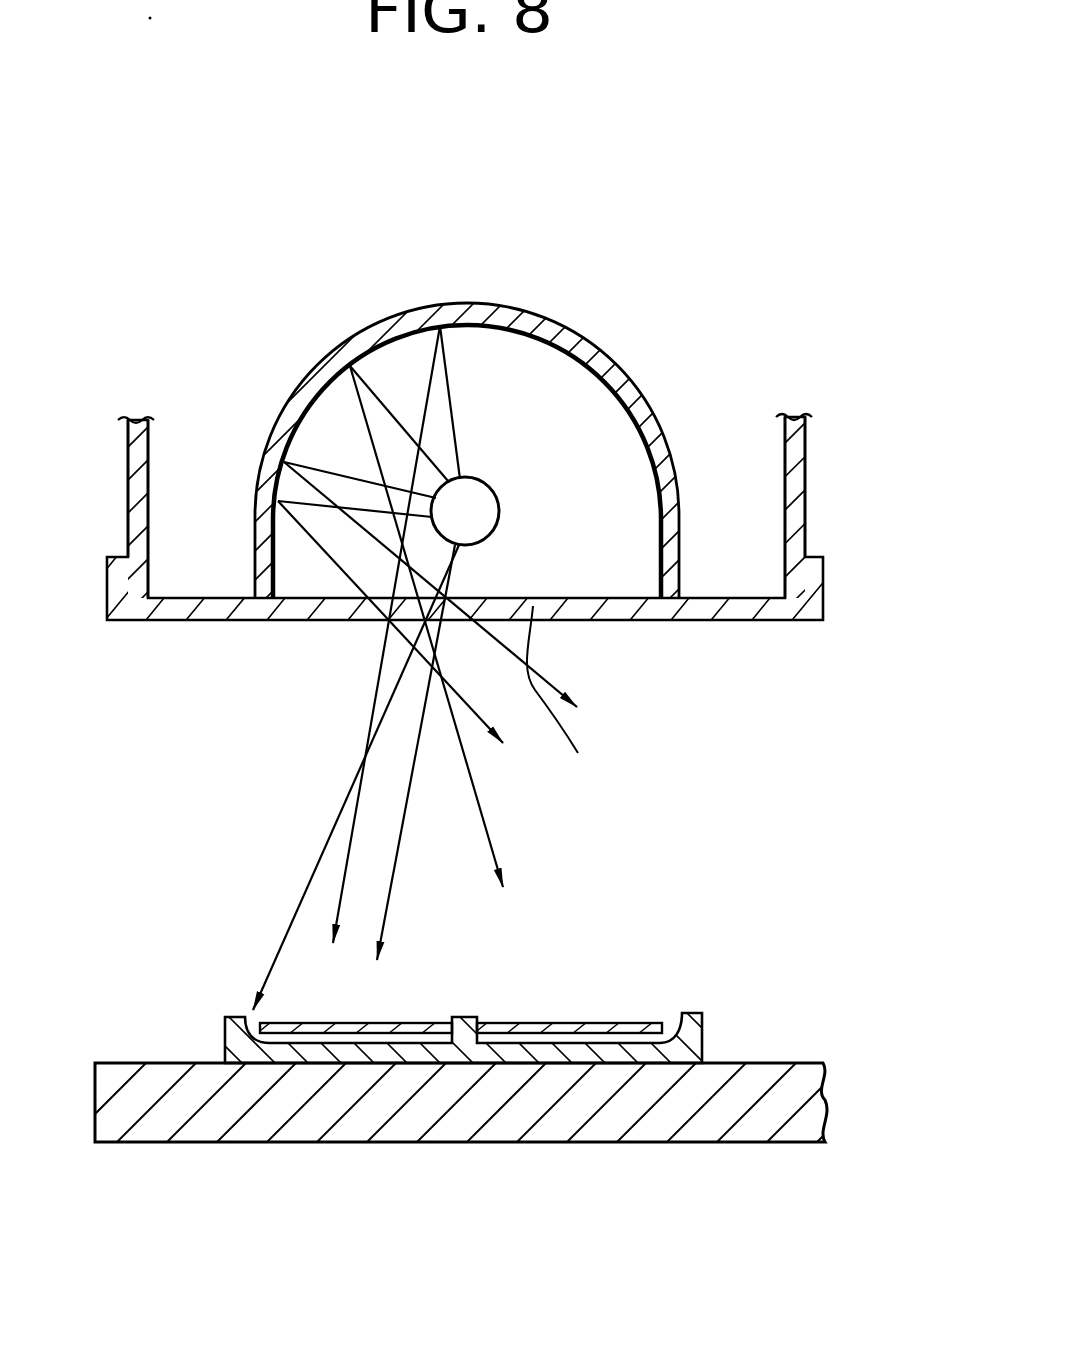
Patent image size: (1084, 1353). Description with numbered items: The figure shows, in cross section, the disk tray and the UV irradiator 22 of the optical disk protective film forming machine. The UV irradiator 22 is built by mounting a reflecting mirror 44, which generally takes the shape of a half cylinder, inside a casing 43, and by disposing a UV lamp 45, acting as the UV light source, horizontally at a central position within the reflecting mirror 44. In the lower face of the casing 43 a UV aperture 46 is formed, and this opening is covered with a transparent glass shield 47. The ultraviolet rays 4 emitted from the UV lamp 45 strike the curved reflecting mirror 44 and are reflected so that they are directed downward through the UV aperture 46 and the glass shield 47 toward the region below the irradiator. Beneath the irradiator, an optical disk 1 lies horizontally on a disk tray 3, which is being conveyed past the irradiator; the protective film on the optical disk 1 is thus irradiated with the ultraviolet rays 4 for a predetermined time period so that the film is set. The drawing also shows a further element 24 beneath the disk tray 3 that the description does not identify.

The optical disk 1 is at (560, 1020).
The disk tray 3 is at (575, 1052).
The ultraviolet rays 4 is at (485, 830).
The UV irradiator 22 is at (416, 300).
The base 24 is at (312, 1122).
The casing 43 is at (798, 478).
The reflecting mirror 44 is at (548, 325).
The UV lamp 45 is at (483, 493).
The UV aperture 46 is at (583, 606).
The transparent glass shield 47 is at (576, 697).